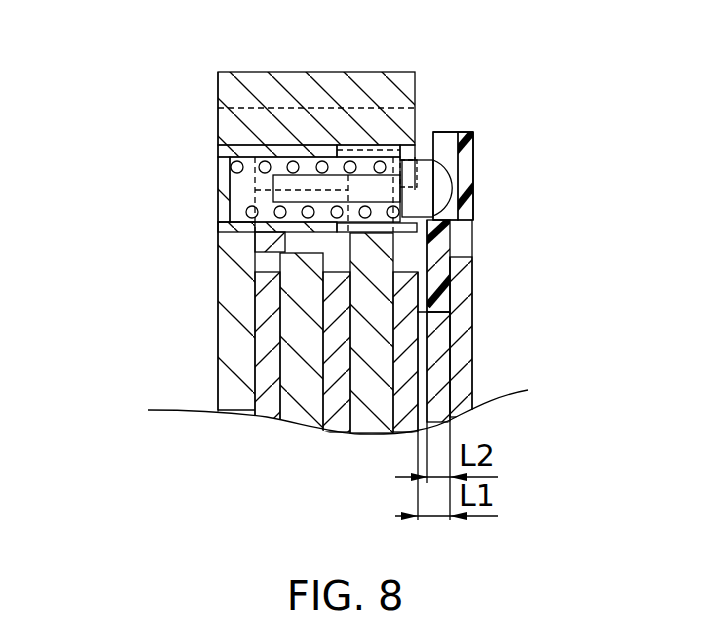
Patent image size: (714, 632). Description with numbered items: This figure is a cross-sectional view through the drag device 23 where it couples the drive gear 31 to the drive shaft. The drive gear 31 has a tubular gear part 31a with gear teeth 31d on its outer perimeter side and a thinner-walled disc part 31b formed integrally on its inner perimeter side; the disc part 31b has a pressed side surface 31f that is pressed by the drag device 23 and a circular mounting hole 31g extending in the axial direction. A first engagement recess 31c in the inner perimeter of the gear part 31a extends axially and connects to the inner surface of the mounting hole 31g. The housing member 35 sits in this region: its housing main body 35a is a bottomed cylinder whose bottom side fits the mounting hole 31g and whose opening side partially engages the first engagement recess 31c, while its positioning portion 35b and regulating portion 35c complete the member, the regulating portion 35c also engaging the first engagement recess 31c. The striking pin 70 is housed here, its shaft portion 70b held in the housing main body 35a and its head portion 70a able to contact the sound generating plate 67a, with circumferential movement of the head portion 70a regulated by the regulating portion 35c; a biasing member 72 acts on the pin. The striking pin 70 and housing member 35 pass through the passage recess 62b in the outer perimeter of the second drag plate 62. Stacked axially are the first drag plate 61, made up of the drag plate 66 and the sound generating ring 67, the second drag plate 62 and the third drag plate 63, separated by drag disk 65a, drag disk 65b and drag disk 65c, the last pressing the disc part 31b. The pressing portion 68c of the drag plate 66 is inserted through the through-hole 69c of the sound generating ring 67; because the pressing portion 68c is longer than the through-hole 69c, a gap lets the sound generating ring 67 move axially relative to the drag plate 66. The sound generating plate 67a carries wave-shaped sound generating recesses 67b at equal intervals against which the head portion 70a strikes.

The drag device 23 is at (410, 248).
The drive gear 31 is at (208, 114).
The gear part 31a is at (214, 91).
The disc part 31b is at (217, 313).
The first engagement recess 31c is at (357, 144).
The gear teeth 31d is at (335, 70).
The pressed side surface 31f is at (262, 393).
The mounting hole 31g is at (221, 218).
The housing member 35 is at (430, 154).
The housing main body 35a is at (272, 158).
The positioning portion 35b is at (258, 247).
The regulating portion 35c is at (472, 288).
The first drag plate 61 is at (491, 265).
The second drag plate 62 is at (368, 442).
The passage recess 62b is at (446, 260).
The third drag plate 63 is at (303, 412).
The drag disk 65a is at (405, 400).
The drag disk 65b is at (332, 363).
The drag disk 65c is at (270, 373).
The drag plate 66 is at (478, 349).
The sound generating ring 67 is at (480, 182).
The sound generating plate 67a is at (468, 130).
The sound generating recess 67b is at (471, 219).
The pressing portion 68c is at (449, 305).
The through-hole 69c is at (472, 369).
The striking pin 70 is at (268, 181).
The head portion 70a is at (455, 178).
The shaft portion 70b is at (315, 183).
The biasing member 72 is at (262, 165).